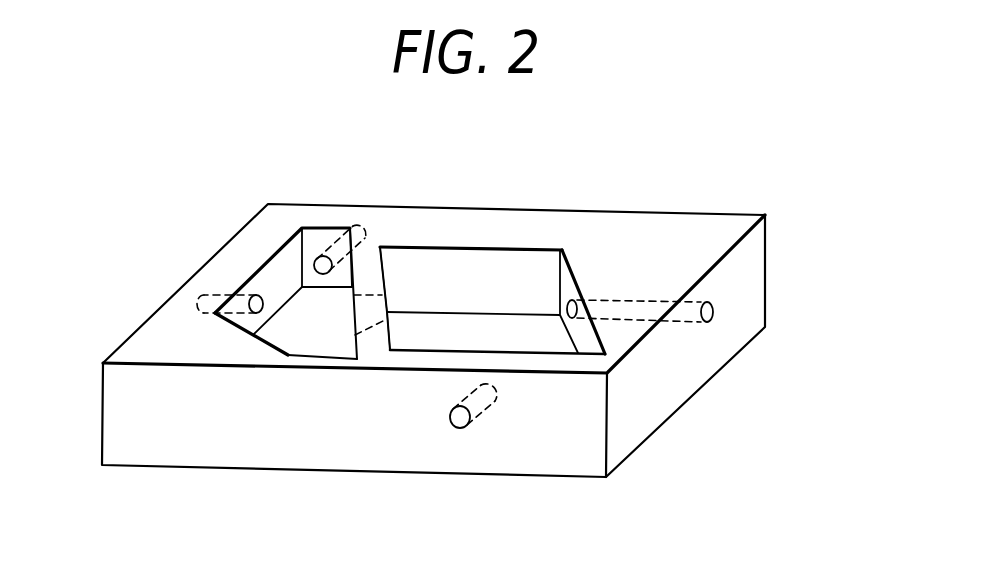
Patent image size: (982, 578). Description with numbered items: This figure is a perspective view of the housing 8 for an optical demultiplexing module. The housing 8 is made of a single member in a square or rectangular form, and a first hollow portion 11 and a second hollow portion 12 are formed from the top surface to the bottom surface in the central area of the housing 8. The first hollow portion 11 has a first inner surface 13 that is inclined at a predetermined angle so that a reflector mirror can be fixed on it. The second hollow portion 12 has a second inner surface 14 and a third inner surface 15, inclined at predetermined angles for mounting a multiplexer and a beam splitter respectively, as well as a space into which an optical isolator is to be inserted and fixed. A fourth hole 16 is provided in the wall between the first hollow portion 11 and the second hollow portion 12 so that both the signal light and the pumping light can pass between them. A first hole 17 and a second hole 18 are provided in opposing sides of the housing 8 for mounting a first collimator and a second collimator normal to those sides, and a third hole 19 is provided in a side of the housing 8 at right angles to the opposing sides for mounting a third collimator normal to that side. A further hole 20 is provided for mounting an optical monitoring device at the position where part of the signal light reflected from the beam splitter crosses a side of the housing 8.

The housing 8 is at (758, 201).
The first hollow portion 11 is at (272, 277).
The second hollow portion 12 is at (508, 267).
The first inner surface 13 is at (276, 339).
The second inner surface 14 is at (387, 285).
The third inner surface 15 is at (571, 287).
The fourth hole 16 is at (365, 293).
The first hole 17 is at (198, 295).
The second hole 18 is at (713, 312).
The third hole 19 is at (352, 224).
The hole 20 is at (483, 410).